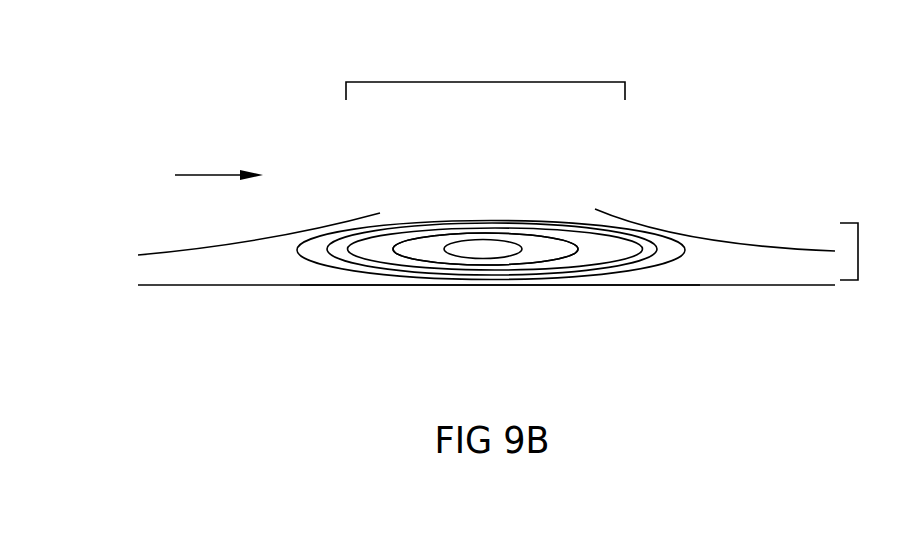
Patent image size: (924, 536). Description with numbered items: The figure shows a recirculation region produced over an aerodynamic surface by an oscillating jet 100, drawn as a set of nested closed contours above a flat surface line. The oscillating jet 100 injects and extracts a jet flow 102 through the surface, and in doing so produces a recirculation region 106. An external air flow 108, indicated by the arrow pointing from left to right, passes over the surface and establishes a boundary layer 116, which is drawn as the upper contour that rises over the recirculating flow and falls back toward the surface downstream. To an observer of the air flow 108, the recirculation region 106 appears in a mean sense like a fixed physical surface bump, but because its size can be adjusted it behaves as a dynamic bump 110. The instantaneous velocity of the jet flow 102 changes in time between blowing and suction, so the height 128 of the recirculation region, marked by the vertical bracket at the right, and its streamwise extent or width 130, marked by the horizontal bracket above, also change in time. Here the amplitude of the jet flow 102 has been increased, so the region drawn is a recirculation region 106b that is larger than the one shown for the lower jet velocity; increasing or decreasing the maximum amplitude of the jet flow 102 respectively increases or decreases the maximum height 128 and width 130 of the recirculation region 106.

The oscillating jet 100 is at (522, 288).
The jet flow 102 is at (576, 208).
The recirculation region 106 is at (648, 278).
The recirculation region 106b is at (363, 263).
The external air flow 108 is at (196, 176).
The dynamic bump 110 is at (495, 193).
The boundary layer 116 is at (153, 267).
The height 128 is at (858, 252).
The width 130 is at (486, 82).